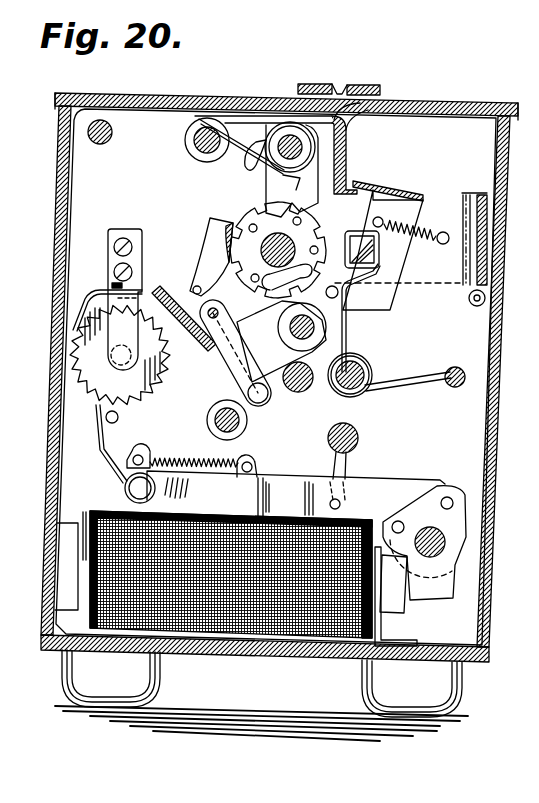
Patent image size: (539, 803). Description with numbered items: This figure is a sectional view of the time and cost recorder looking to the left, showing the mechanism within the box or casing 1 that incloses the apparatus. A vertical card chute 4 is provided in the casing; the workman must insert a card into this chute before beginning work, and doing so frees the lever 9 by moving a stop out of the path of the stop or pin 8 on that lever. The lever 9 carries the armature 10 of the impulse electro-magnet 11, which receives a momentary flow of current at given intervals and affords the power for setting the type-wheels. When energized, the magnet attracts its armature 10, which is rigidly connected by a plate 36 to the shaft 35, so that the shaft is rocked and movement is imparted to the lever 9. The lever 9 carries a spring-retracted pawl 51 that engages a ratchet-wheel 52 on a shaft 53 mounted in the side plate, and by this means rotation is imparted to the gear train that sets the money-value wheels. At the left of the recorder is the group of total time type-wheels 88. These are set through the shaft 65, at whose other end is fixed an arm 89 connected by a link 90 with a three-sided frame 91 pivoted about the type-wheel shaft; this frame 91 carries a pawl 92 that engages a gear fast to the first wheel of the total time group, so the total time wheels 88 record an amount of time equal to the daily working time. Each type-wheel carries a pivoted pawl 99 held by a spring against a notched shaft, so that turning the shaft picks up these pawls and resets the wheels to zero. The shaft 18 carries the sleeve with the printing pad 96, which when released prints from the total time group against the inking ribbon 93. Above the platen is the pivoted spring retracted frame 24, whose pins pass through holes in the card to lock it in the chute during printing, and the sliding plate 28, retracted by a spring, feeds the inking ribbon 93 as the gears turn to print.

The box or casing 1 is at (63, 337).
The card chute 4 is at (348, 151).
The stop or pin 8 is at (342, 498).
The lever 9 is at (274, 492).
The armature 10 is at (405, 608).
The impulse electro-magnet 11 is at (93, 507).
The shaft 18 is at (354, 374).
The spring retracted frame 24 is at (395, 186).
The sliding plate 28 is at (486, 243).
The shaft 35 is at (446, 543).
The plate 36 is at (409, 584).
The spring-retracted pawl 51 is at (104, 440).
The ratchet-wheel 52 is at (120, 355).
The shaft 53 is at (125, 356).
The shaft 65 is at (318, 329).
The total time type-wheels 88 is at (266, 125).
The arm 89 is at (281, 341).
The link 90 is at (232, 368).
The three-sided frame 91 is at (160, 288).
The pawl 92 is at (212, 222).
The inking ribbon 93 is at (458, 263).
The printing pad 96 is at (332, 382).
The pivoted pawl 99 is at (278, 250).